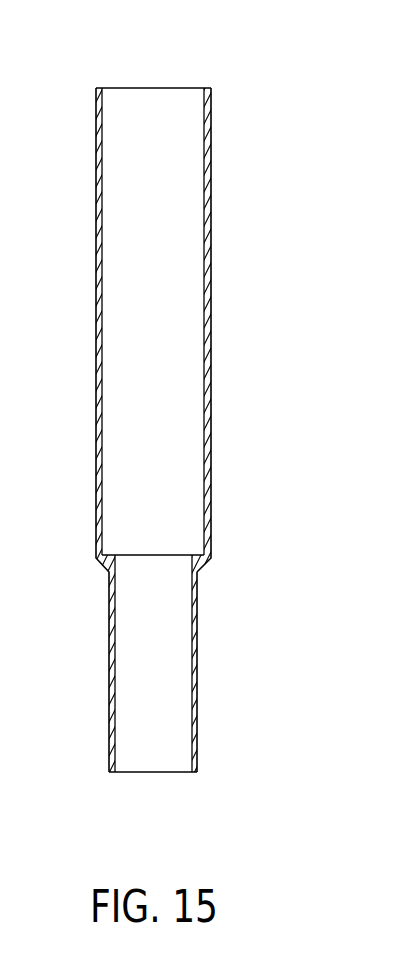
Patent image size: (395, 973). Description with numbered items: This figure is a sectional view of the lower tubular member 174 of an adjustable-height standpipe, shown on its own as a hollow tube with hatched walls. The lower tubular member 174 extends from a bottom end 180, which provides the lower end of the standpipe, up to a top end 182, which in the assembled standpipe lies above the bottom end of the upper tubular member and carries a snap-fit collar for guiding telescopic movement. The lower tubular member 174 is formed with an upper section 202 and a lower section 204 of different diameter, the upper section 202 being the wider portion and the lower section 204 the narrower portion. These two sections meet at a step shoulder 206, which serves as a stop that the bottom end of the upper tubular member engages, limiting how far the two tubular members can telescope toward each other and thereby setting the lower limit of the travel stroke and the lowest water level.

The lower tubular member 174 is at (96, 398).
The bottom end 180 is at (130, 773).
The top end 182 is at (129, 88).
The upper section 202 is at (211, 321).
The lower section 204 is at (196, 674).
The step shoulder 206 is at (197, 550).